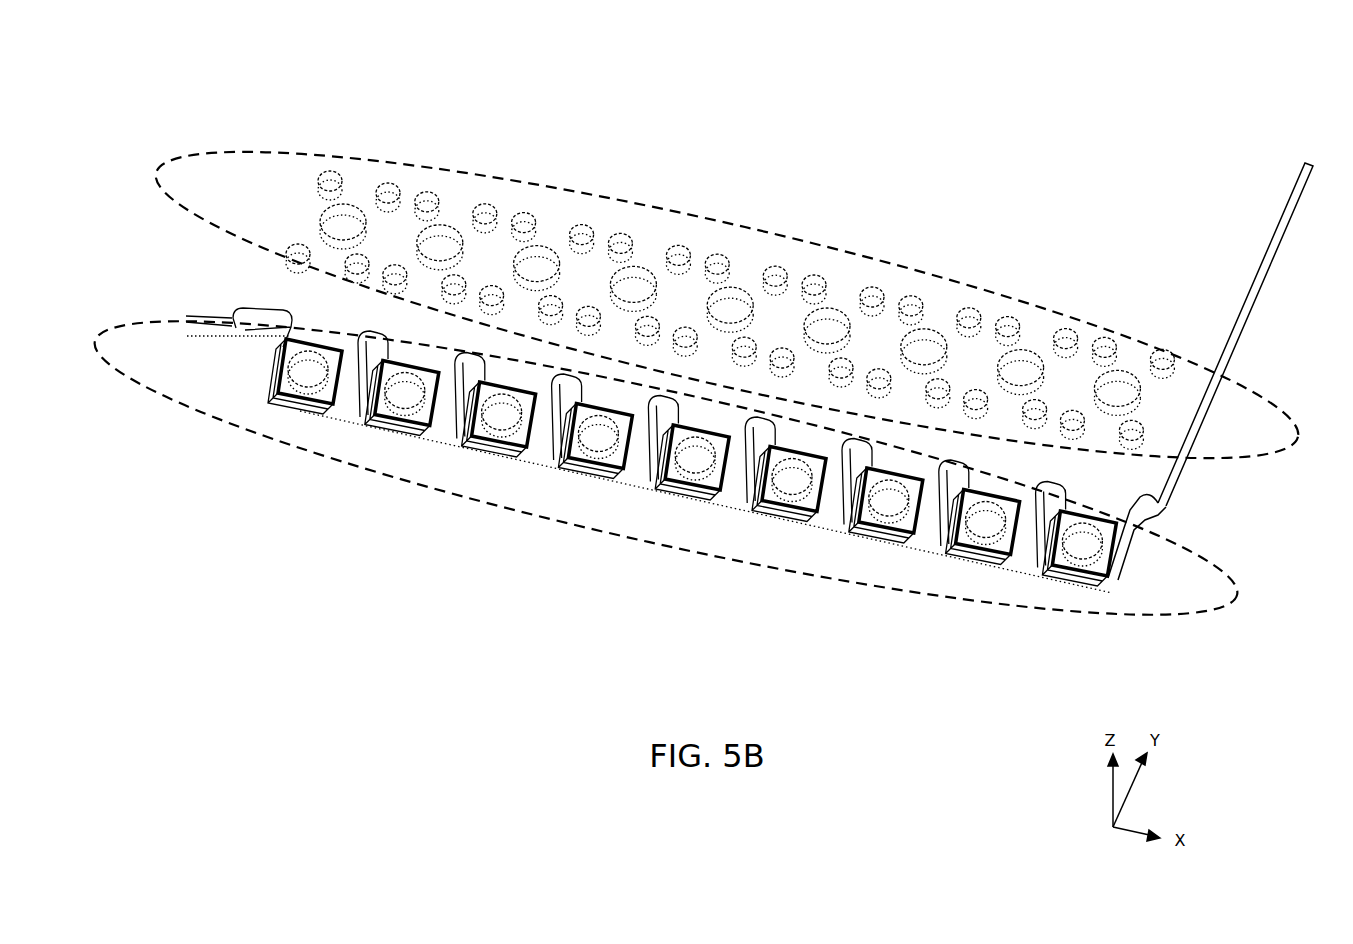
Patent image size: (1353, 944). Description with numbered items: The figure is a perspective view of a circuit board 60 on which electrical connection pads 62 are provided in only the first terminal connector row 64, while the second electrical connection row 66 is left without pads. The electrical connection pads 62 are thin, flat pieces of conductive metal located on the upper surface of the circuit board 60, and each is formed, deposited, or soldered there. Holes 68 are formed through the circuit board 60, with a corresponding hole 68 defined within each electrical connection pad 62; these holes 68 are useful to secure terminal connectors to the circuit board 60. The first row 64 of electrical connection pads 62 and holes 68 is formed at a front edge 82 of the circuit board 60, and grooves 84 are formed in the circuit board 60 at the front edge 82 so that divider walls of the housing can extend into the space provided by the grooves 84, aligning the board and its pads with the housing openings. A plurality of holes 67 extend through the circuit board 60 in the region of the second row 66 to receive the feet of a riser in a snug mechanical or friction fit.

The circuit board 60 is at (1255, 308).
The electrical connection pads 62 is at (683, 487).
The first terminal connector row 64 is at (1210, 570).
The second electrical connection row 66 is at (1268, 398).
The holes 67 is at (384, 193).
The holes 68 is at (789, 480).
The front edge 82 is at (495, 450).
The grooves 84 is at (340, 400).